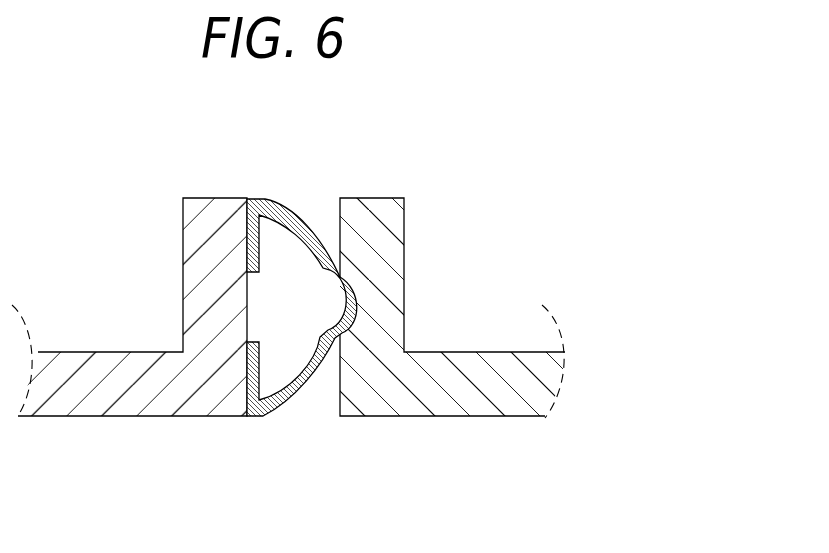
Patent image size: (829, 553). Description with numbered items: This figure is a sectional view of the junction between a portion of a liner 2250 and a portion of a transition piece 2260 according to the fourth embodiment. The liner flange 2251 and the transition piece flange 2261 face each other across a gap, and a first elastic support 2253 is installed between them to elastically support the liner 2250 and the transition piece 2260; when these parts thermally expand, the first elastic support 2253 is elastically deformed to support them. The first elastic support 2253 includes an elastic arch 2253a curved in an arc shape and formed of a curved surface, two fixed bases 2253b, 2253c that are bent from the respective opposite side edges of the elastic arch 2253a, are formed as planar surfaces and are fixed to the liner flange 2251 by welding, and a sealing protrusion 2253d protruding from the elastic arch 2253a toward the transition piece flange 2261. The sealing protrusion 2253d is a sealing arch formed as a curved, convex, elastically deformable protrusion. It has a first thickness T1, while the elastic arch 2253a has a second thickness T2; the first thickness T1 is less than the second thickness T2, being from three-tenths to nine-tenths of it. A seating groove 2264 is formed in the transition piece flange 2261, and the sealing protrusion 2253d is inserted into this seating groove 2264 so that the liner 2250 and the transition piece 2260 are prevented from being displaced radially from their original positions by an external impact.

The liner 2250 is at (143, 424).
The liner flange 2251 is at (184, 238).
The first elastic support 2253 is at (309, 216).
The elastic arch 2253a is at (308, 392).
The fixed base 2253b is at (247, 248).
The fixed base 2253c is at (258, 372).
The sealing protrusion 2253d is at (336, 337).
The transition piece 2260 is at (445, 424).
The transition piece flange 2261 is at (403, 240).
The seating groove 2264 is at (350, 283).
The first thickness T1 is at (368, 307).
The second thickness T2 is at (338, 268).